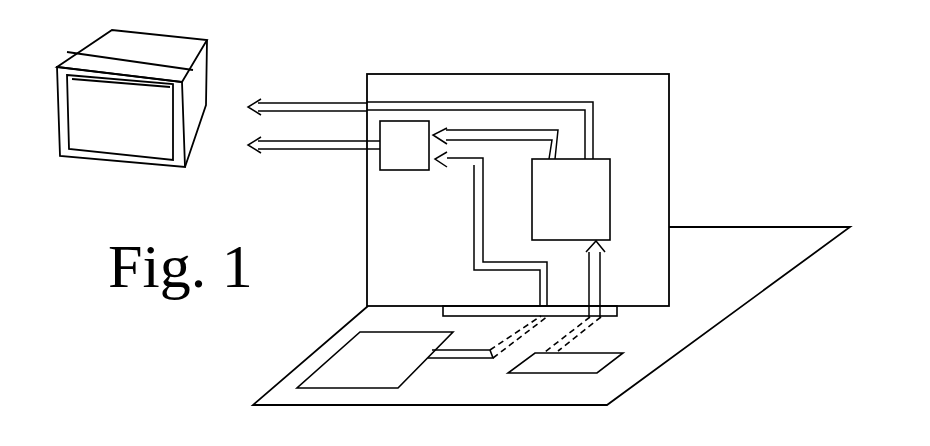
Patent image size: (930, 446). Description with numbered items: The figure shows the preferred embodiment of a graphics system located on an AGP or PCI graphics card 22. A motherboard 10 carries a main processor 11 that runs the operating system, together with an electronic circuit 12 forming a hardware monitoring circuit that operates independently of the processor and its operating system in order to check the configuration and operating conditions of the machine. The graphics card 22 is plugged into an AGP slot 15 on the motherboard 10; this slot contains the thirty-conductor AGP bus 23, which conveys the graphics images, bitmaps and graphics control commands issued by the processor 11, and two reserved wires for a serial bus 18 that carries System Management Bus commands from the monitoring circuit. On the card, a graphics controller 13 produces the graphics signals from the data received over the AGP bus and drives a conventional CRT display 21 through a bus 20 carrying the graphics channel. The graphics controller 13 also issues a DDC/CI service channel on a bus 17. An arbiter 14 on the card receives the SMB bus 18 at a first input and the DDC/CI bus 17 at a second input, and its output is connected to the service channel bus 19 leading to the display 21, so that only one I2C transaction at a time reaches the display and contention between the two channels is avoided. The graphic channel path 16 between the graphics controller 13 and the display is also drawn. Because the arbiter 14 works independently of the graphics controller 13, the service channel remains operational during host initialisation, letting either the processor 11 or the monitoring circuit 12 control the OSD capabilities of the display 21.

The motherboard 10 is at (720, 227).
The main processor 11 is at (623, 353).
The electronic circuit 12 is at (358, 333).
The graphics controller 13 is at (609, 158).
The arbiter 14 is at (420, 172).
The AGP slot 15 is at (466, 305).
The graphic channel line 16 is at (596, 101).
The DDC/CI bus 17 is at (537, 144).
The serial bus 18 is at (472, 212).
The service channel bus 19 is at (251, 153).
The graphics channel bus 20 is at (251, 112).
The display 21 is at (58, 160).
The graphics card 22 is at (672, 72).
The AGP bus 23 is at (604, 272).